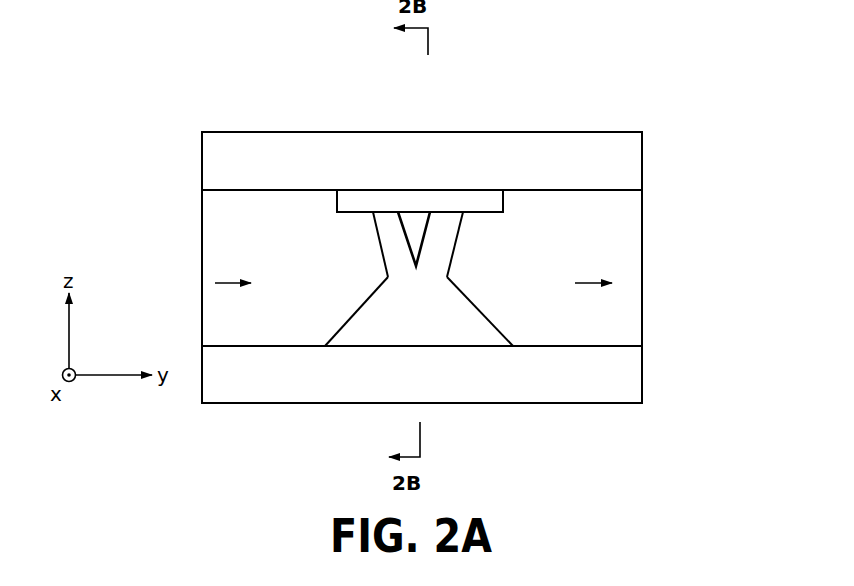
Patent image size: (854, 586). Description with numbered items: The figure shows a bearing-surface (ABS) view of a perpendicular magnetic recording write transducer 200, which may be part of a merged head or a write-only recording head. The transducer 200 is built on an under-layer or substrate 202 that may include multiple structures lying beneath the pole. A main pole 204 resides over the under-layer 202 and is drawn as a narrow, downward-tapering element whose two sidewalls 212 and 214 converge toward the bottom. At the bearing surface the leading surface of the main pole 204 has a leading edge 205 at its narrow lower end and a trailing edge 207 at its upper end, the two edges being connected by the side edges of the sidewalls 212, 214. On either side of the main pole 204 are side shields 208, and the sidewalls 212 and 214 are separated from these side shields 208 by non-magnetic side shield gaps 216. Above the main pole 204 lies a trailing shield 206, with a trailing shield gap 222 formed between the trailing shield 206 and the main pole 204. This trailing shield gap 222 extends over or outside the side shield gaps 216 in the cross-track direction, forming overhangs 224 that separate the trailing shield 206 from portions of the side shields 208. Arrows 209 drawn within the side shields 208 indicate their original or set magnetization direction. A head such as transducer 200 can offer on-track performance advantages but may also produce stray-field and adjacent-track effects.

The perpendicular magnetic recording transducer 200 is at (193, 86).
The under-layer/substrate 202 is at (587, 384).
The main pole 204 is at (420, 222).
The leading edge 205 is at (416, 266).
The trailing shield 206 is at (588, 170).
The trailing edge 207 is at (427, 213).
The side shields 208 is at (277, 228).
The arrows 209 is at (236, 284).
The sidewall 212 is at (400, 240).
The sidewall 214 is at (430, 240).
The non-magnetic side shield gaps 216 is at (398, 264).
The trailing shield gap 222 is at (418, 198).
The overhangs 224 is at (350, 190).